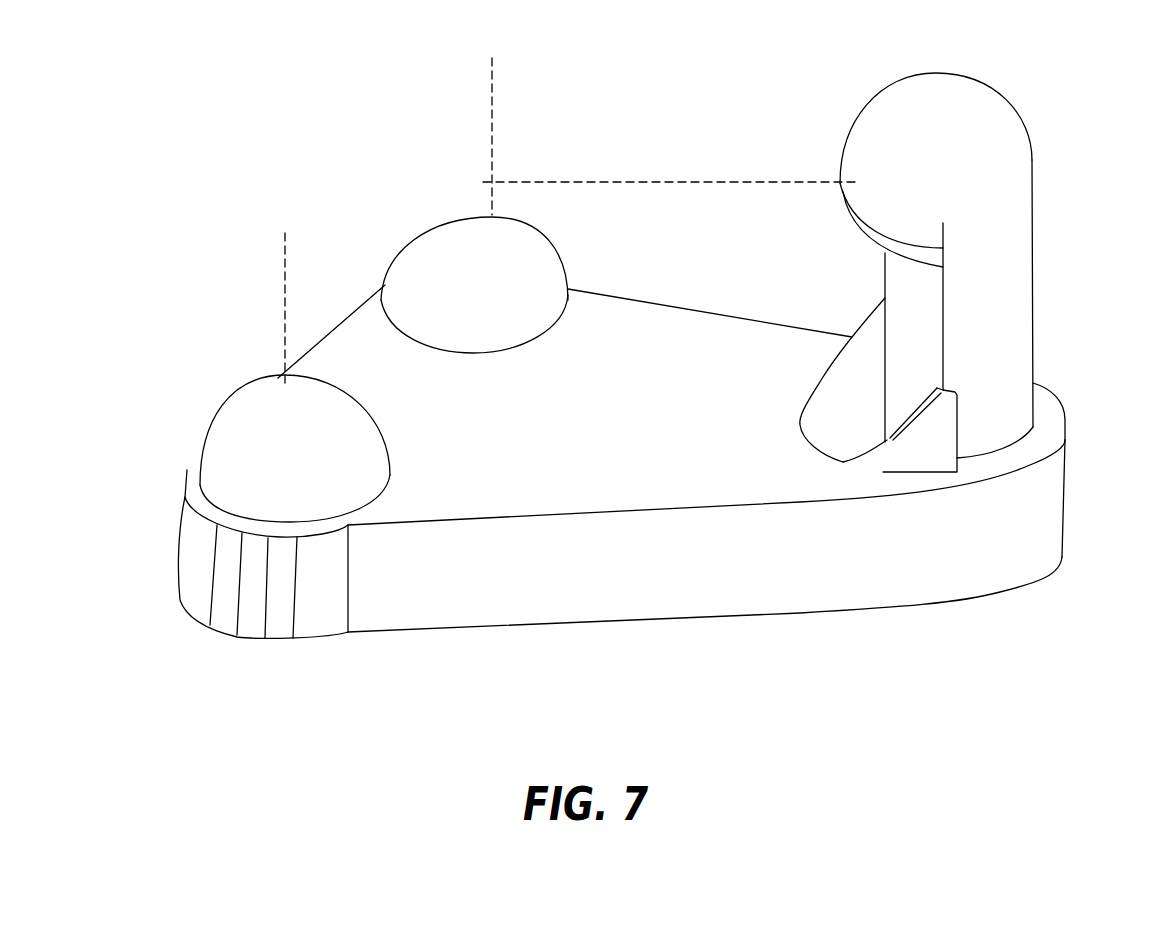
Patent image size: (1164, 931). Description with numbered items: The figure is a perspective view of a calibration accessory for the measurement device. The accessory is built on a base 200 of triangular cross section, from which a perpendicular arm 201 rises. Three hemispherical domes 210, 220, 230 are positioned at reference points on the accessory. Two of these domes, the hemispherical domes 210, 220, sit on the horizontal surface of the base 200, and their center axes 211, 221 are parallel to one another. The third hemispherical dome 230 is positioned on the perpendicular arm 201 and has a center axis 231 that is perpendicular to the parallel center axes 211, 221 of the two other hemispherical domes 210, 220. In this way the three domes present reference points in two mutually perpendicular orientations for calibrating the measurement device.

The base 200 is at (672, 583).
The perpendicular arm 201 is at (1018, 296).
The hemispherical dome 210 is at (223, 459).
The center axis 211 is at (283, 317).
The hemispherical dome 220 is at (421, 284).
The center axis 221 is at (490, 128).
The hemispherical dome 230 is at (842, 183).
The center axis 231 is at (677, 178).